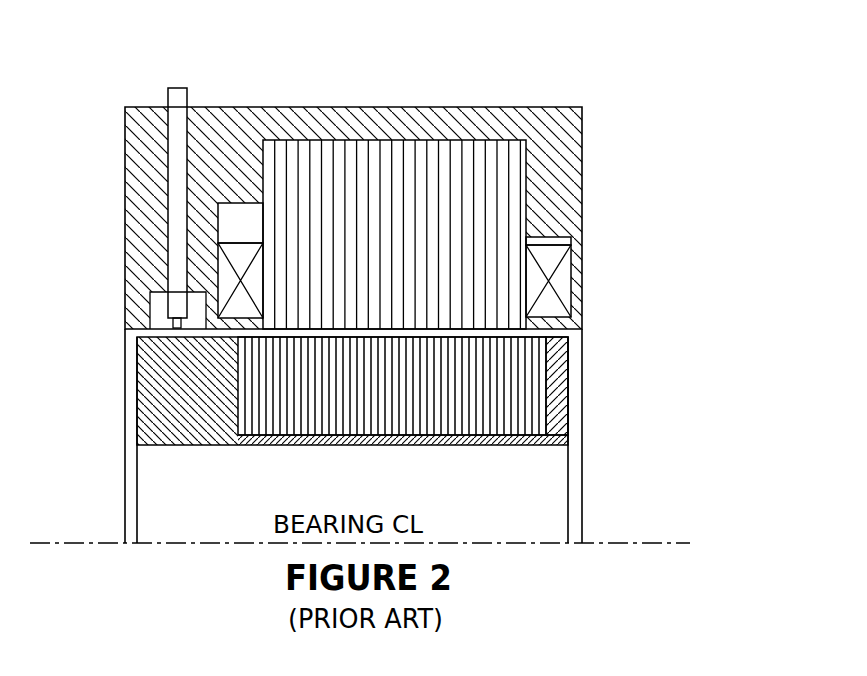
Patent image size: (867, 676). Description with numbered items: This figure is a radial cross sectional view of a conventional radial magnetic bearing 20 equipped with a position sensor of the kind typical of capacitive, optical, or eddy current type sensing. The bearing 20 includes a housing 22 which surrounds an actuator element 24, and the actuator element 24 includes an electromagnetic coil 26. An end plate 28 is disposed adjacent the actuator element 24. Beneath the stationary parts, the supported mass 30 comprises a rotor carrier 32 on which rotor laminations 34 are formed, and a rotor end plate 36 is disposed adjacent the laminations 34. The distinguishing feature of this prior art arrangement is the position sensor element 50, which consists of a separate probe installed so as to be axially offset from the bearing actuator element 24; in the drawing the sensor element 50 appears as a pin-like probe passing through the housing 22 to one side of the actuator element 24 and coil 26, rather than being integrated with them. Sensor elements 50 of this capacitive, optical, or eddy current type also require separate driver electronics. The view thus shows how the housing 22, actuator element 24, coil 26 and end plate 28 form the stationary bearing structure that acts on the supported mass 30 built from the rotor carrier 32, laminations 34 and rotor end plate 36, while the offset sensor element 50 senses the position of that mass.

The radial magnetic bearing 20 is at (405, 276).
The housing 22 is at (582, 121).
The actuator element 24 is at (452, 188).
The electromagnetic coil 26 is at (560, 284).
The end plate 28 is at (405, 198).
The supported mass 30 is at (426, 424).
The rotor carrier 32 is at (600, 430).
The rotor laminations 34 is at (497, 383).
The rotor end plate 36 is at (568, 407).
The position sensor element 50 is at (168, 87).